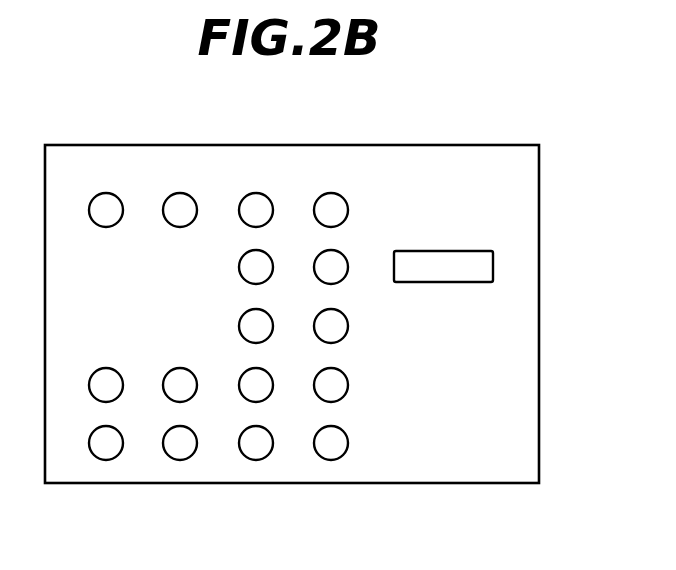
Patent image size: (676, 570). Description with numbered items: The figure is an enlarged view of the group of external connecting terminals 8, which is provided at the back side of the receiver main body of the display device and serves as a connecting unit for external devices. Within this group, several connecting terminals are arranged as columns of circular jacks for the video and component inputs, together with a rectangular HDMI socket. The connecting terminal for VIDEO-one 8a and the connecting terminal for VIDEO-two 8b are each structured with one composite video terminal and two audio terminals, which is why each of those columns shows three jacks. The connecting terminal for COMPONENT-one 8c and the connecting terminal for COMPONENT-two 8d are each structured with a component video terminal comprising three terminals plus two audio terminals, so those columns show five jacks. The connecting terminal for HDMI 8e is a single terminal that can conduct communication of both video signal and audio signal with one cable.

The group of external connecting terminals 8 is at (541, 183).
The connecting terminal for VIDEO-1 8a is at (111, 464).
The connecting terminal for VIDEO-2 8b is at (184, 464).
The connecting terminal for COMPONENT-1 8c is at (256, 464).
The connecting terminal for COMPONENT-2 8d is at (337, 464).
The connecting terminal for HDMI 8e is at (466, 287).